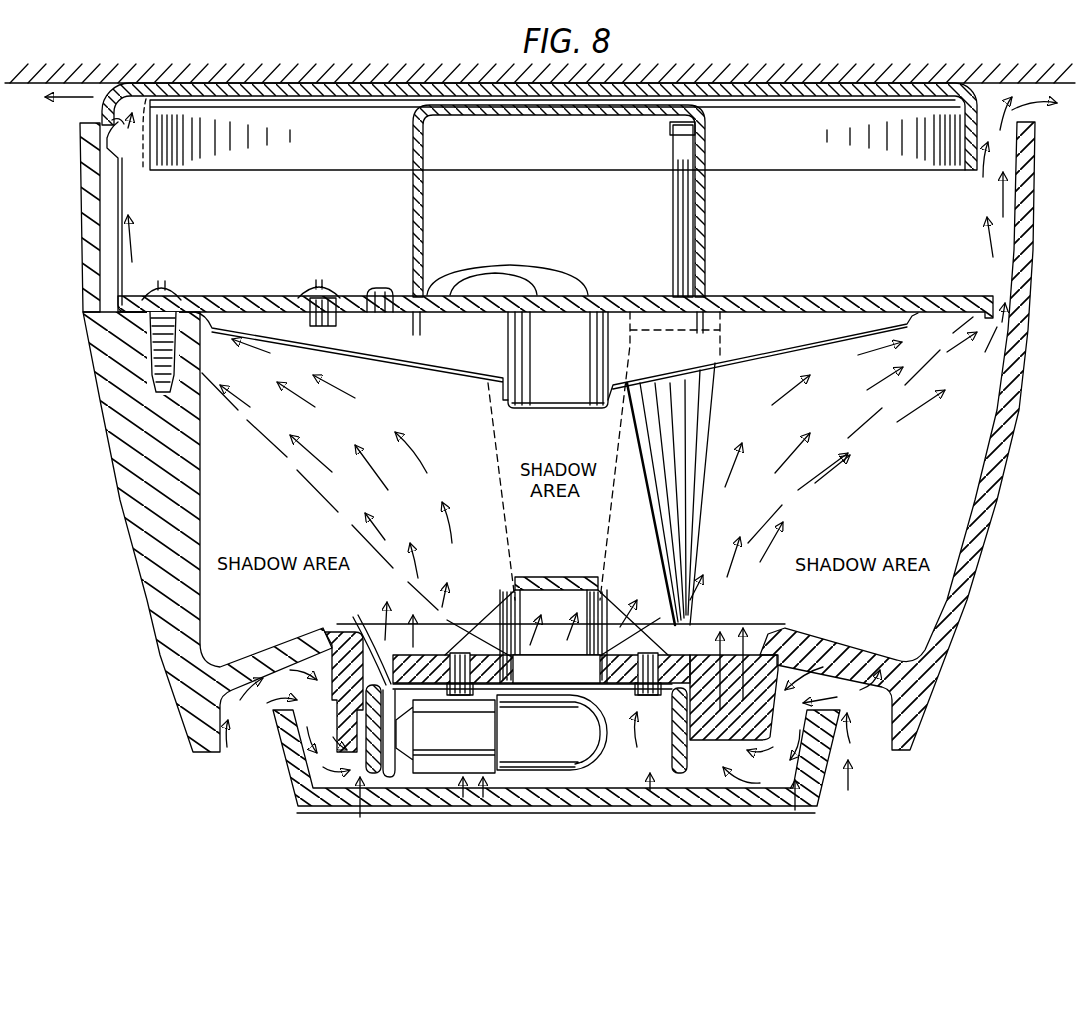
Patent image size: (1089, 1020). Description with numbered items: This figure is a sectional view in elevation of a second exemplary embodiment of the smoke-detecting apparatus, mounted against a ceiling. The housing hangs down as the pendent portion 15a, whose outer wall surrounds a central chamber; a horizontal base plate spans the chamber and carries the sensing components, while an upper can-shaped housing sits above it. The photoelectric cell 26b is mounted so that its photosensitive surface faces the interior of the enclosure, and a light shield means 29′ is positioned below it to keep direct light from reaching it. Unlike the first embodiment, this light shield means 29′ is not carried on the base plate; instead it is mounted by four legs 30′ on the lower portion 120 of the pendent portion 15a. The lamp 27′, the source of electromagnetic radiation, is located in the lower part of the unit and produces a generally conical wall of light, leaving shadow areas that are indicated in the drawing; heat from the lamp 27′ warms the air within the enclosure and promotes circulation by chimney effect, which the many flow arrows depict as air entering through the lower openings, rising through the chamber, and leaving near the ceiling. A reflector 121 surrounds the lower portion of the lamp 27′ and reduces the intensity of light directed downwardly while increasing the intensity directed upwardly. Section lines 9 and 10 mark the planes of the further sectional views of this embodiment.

The pendent portion 15a is at (90, 359).
The photoelectric cell 26b is at (553, 410).
The light shield means 29′ is at (551, 577).
The legs 30′ is at (510, 600).
The lower portion 120 is at (683, 660).
The lamp 27′ is at (617, 716).
The reflector 121 is at (573, 767).
The section line 9- 9 is at (118, 572).
The section line 10- 10 is at (257, 735).